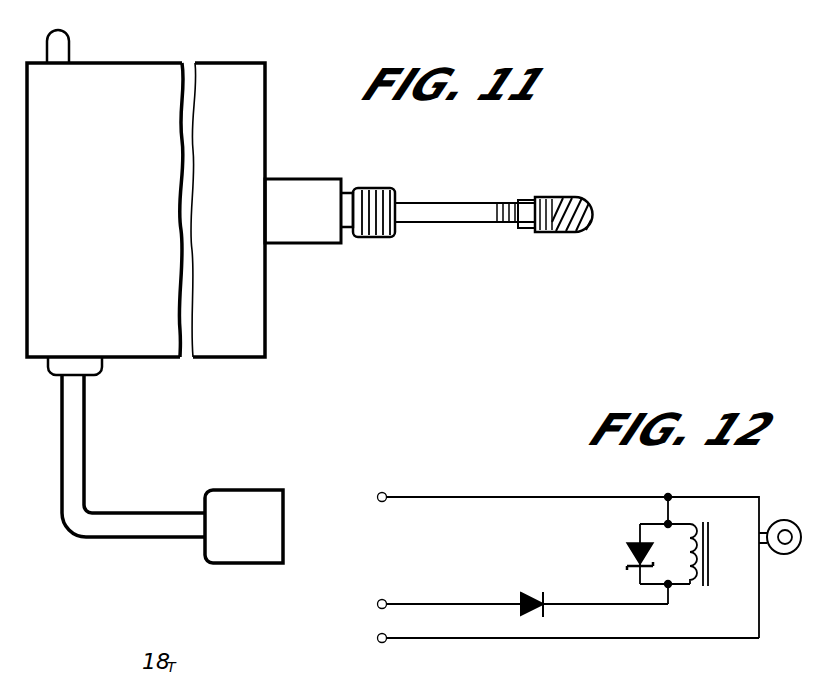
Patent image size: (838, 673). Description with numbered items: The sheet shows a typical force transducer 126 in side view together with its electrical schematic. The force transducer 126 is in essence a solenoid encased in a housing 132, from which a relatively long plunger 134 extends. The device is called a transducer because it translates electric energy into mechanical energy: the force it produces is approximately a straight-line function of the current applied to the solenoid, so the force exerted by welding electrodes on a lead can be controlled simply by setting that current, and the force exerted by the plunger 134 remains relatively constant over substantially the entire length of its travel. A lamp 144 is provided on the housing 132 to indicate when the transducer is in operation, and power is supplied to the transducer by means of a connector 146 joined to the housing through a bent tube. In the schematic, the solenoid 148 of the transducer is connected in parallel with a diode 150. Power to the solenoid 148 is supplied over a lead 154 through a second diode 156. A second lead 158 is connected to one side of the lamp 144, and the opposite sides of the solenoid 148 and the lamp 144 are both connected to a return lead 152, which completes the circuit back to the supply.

In FIG. 11, the force transducer 126 is at (198, 62).
In FIG. 11, the housing 132 is at (266, 311).
In FIG. 11, the plunger 134 is at (470, 200).
In FIG. 11, the lamp 144 is at (72, 31).
In FIG. 12, the lamp 144 is at (788, 520).
In FIG. 11, the connector 146 is at (255, 488).
In FIG. 12, the solenoid 148 is at (707, 525).
In FIG. 12, the diode 150 is at (628, 548).
In FIG. 12, the return lead 152 is at (510, 496).
In FIG. 12, the lead 154 is at (452, 604).
In FIG. 12, the second diode 156 is at (530, 592).
In FIG. 12, the second lead 158 is at (568, 638).